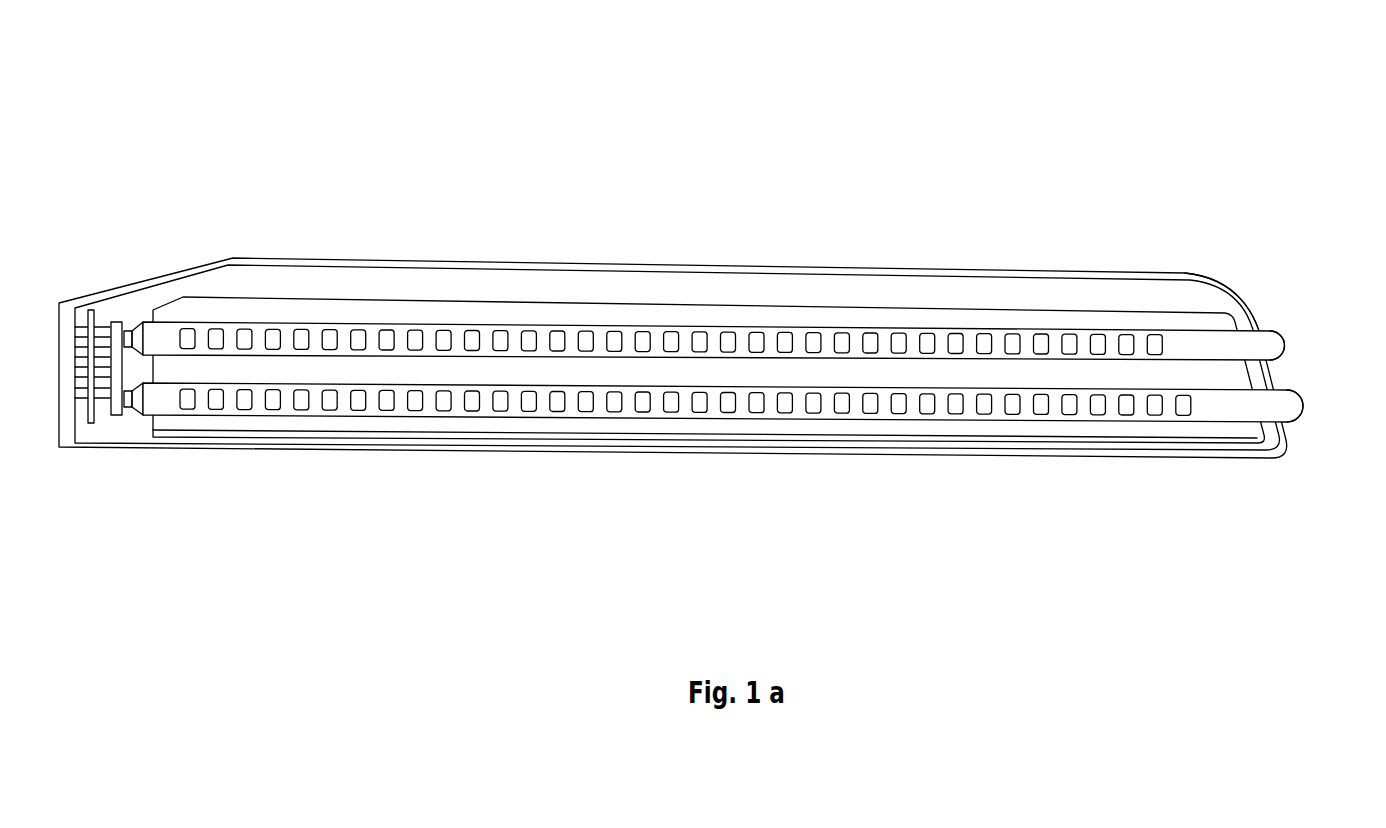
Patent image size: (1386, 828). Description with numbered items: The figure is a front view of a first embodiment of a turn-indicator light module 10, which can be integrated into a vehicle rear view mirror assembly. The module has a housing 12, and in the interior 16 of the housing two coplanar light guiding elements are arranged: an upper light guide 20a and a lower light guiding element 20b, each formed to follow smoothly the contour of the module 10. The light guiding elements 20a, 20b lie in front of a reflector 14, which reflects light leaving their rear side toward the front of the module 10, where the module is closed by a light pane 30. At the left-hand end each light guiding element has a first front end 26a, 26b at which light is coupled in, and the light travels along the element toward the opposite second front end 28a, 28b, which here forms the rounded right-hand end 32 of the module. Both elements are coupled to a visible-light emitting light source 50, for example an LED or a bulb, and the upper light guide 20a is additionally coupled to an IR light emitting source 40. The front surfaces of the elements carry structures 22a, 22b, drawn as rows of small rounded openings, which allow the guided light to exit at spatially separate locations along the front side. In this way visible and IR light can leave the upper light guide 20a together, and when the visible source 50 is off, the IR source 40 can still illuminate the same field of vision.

The turn-indicator light module 10 is at (708, 310).
The housing 12 is at (691, 299).
The reflector 14 is at (428, 302).
The interior 16 is at (513, 283).
The upper light guide 20a is at (753, 265).
The light guiding element 20b is at (750, 480).
The structures 22a is at (813, 336).
The structures 22b is at (813, 405).
The first front end 26a is at (133, 322).
The first front end 26b is at (137, 408).
The second front end 28a is at (1285, 345).
The second front end 28b is at (1303, 403).
The light pane 30 is at (939, 287).
The rounded housing end 32 is at (1247, 307).
The IR light emitting source 40 is at (117, 323).
The visible-light emitting light source 50 is at (112, 398).